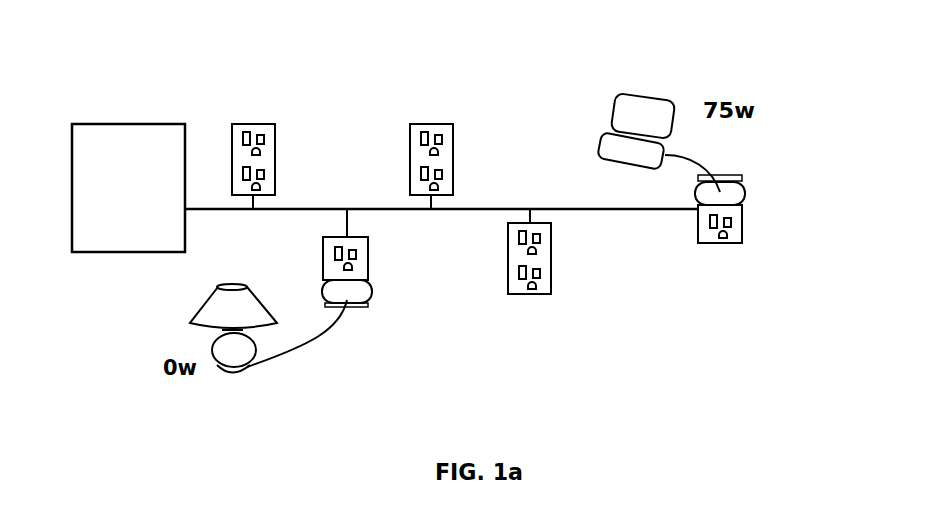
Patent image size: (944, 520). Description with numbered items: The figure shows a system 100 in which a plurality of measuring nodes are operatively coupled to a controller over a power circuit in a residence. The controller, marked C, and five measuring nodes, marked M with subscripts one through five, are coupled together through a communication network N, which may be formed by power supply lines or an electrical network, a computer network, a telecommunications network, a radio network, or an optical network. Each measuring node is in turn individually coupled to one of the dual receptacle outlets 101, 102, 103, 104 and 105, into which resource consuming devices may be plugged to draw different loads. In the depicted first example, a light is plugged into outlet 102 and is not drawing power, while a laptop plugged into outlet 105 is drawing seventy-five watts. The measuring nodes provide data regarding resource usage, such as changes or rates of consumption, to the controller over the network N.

The system 100 is at (130, 109).
The communication network N is at (359, 203).
The dual receptacle outlet 101 is at (277, 152).
The dual receptacle outlet 102 is at (368, 265).
The dual receptacle outlet 103 is at (453, 152).
The dual receptacle outlet 104 is at (552, 255).
The dual receptacle outlet 105 is at (742, 217).